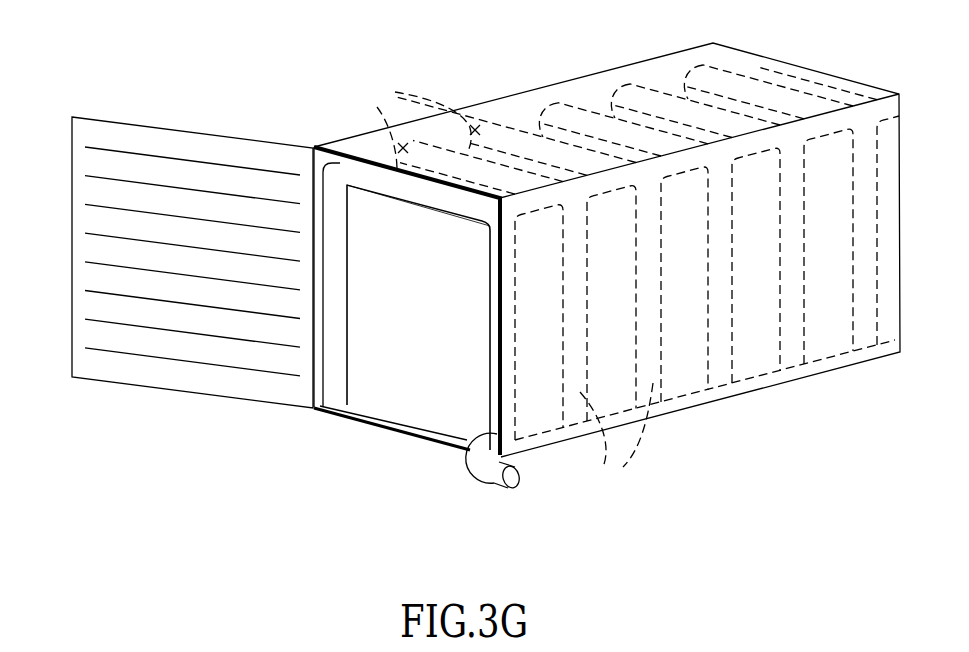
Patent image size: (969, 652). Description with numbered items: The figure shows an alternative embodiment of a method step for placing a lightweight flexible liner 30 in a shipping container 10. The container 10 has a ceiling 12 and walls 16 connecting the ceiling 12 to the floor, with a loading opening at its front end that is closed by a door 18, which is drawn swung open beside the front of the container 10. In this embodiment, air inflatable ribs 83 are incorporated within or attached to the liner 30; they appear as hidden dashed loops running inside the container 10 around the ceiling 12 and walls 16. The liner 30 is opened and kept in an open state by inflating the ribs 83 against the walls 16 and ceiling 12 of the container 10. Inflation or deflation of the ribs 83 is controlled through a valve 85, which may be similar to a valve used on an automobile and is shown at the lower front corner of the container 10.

The shipping container 10 is at (803, 62).
The ceiling 12 is at (533, 167).
The walls 16 is at (500, 303).
The door 18 is at (140, 140).
The lightweight flexible liner 30 is at (383, 427).
The air inflatable ribs 83 is at (330, 190).
The valve 85 is at (490, 478).